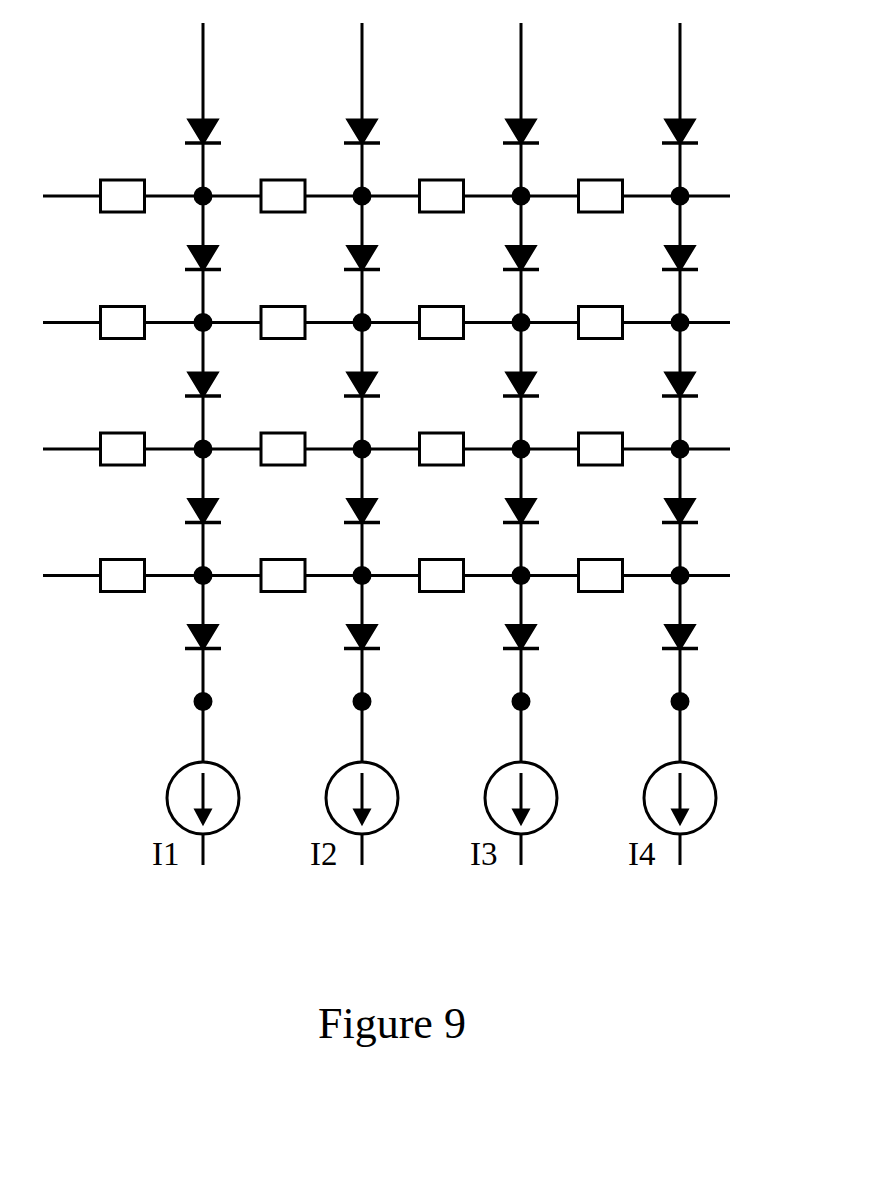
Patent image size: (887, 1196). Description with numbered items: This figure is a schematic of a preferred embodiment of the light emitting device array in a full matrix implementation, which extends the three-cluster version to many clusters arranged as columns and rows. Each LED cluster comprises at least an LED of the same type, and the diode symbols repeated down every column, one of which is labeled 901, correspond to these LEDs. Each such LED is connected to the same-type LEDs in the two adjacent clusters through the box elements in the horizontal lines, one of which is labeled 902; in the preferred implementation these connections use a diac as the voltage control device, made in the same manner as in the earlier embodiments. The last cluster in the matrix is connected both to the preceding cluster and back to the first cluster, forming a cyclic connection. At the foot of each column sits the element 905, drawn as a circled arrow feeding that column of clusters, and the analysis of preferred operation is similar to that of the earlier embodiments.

The diode 901 is at (707, 513).
The resistor 902 is at (283, 595).
The current source 905 is at (162, 778).